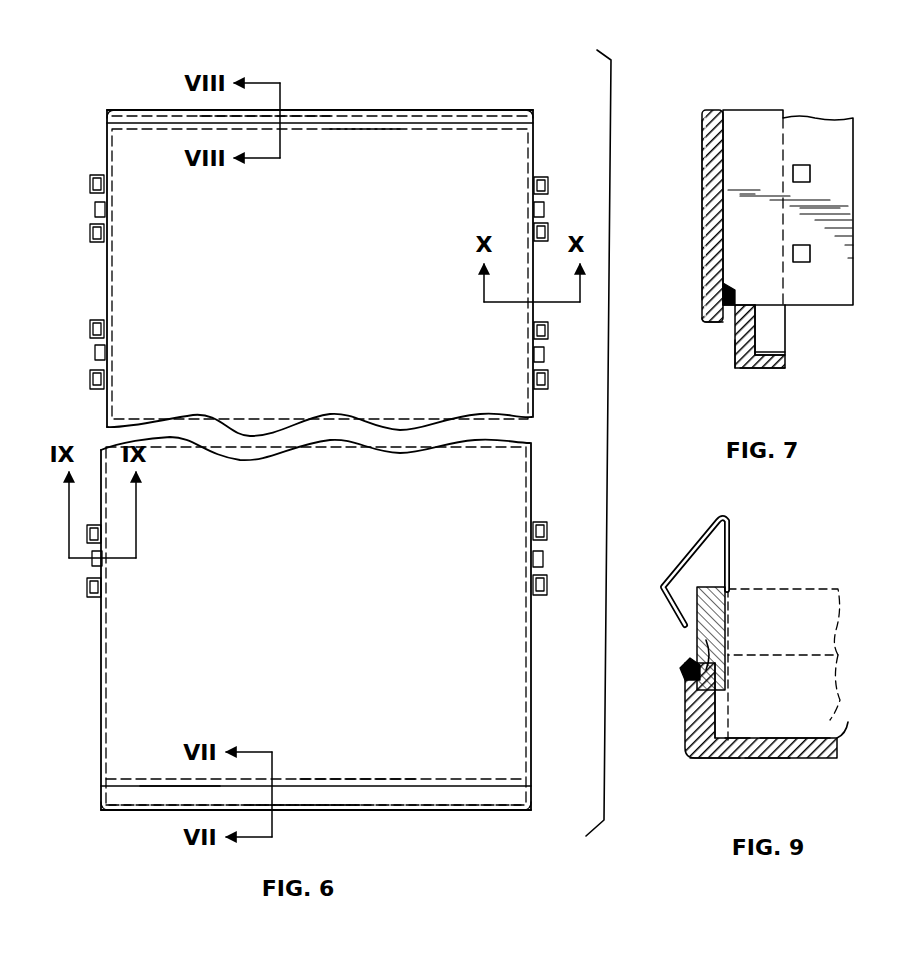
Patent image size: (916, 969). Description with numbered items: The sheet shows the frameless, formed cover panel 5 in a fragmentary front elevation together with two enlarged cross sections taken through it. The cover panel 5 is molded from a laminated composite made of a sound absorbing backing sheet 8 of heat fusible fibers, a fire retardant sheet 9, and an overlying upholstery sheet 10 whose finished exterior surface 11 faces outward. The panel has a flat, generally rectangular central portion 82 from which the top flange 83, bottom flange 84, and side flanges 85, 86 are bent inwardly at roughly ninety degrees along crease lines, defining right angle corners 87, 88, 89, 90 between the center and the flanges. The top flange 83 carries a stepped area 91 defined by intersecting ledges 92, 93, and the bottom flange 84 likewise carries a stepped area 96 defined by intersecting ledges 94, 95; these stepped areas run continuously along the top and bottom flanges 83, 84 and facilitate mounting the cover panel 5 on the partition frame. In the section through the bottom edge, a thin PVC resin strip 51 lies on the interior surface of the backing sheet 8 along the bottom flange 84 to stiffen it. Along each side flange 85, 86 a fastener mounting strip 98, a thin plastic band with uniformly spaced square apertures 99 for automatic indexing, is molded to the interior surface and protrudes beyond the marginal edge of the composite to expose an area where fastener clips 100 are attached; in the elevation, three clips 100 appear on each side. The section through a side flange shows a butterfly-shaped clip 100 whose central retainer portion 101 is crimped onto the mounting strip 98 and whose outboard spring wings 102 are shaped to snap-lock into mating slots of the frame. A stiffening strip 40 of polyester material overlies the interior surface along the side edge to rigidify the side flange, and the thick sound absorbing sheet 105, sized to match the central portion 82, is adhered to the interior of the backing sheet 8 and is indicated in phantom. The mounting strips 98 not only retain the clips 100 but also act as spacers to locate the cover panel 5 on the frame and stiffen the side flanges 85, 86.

In FIG. 6, the cover panel 5 is at (310, 454).
In FIG. 7, the cover panel 5 is at (767, 235).
In FIG. 9, the cover panel 5 is at (738, 659).
In FIG. 7, the sound absorbing backing sheet 8 is at (725, 146).
In FIG. 9, the sound absorbing backing sheet 8 is at (822, 738).
In FIG. 7, the fire retardant sheet 9 is at (790, 360).
In FIG. 9, the fire retardant sheet 9 is at (843, 736).
In FIG. 7, the upholstery sheet 10 is at (765, 368).
In FIG. 9, the upholstery sheet 10 is at (758, 758).
In FIG. 7, the finished exterior surface 11 is at (702, 226).
In FIG. 9, the finished exterior surface 11 is at (718, 758).
In FIG. 9, the stiffening strip 40 is at (742, 736).
In FIG. 7, the resin strip 51 is at (730, 296).
In FIG. 6, the central portion 82 is at (316, 467).
In FIG. 7, the central portion 82 is at (703, 130).
In FIG. 9, the central portion 82 is at (792, 760).
In FIG. 6, the top flange 83 is at (318, 110).
In FIG. 6, the bottom flange 84 is at (397, 812).
In FIG. 7, the bottom flange 84 is at (740, 366).
In FIG. 9, the bottom flange 84 is at (686, 708).
In FIG. 6, the side flange 85 is at (105, 282).
In FIG. 6, the side flange 86 is at (535, 482).
In FIG. 6, the right angle corner 87 is at (108, 110).
In FIG. 6, the right angle corner 88 is at (535, 112).
In FIG. 6, the right angle corner 89 is at (100, 812).
In FIG. 6, the right angle corner 90 is at (531, 812).
In FIG. 6, the stepped area 91 is at (430, 111).
In FIG. 6, the ledge 92 is at (386, 118).
In FIG. 6, the ledge 93 is at (354, 126).
In FIG. 6, the ledge 94 is at (308, 800).
In FIG. 7, the ledge 94 is at (734, 340).
In FIG. 6, the ledge 95 is at (358, 786).
In FIG. 7, the ledge 95 is at (710, 322).
In FIG. 6, the stepped area 96 is at (158, 798).
In FIG. 7, the fastener mounting strip 98 is at (845, 206).
In FIG. 9, the fastener mounting strip 98 is at (716, 712).
In FIG. 7, the aperture 99 is at (805, 262).
In FIG. 9, the aperture 99 is at (712, 650).
In FIG. 6, the fastener clip 100 is at (88, 178).
In FIG. 9, the fastener clip 100 is at (705, 568).
In FIG. 9, the central retainer portion 101 is at (697, 660).
In FIG. 9, the spring wing 102 is at (692, 542).
In FIG. 9, the sound absorbing sheet 105 is at (766, 612).